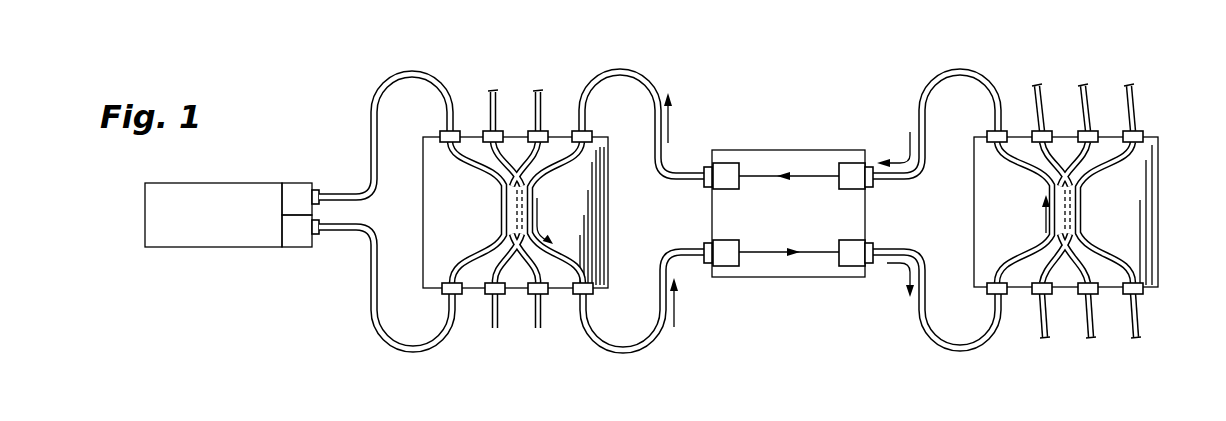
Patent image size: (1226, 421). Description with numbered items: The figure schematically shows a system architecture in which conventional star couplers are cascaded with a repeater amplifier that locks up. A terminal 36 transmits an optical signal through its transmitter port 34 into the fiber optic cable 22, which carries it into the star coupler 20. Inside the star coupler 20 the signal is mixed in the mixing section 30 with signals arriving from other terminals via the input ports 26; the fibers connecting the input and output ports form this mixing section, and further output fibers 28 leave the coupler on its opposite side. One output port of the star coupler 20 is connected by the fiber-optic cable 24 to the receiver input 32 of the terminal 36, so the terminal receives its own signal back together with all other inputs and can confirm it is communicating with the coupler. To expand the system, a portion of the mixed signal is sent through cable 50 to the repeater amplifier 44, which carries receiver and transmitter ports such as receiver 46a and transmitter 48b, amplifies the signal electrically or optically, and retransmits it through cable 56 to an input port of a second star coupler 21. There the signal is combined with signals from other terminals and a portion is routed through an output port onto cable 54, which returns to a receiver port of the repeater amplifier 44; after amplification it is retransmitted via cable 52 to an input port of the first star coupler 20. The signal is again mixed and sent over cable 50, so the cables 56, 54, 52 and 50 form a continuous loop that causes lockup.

The star coupler 20 is at (535, 211).
The star coupler 21 is at (1166, 209).
The fiber optic cable 22 is at (402, 67).
The fiber-optic cable 24 is at (378, 336).
The input ports 26 is at (540, 92).
The output optical fibers 28 is at (540, 328).
The mixing section 30 is at (496, 213).
The receiver input 32 is at (300, 247).
The transmitter port 34 is at (300, 183).
The terminal 36 is at (208, 254).
The repeater amplifier 44 is at (793, 217).
The repeater receiver 46a is at (737, 266).
The repeater transmitter 48b is at (728, 163).
The cable 50 is at (628, 357).
The cable 52 is at (641, 72).
The cable 54 is at (963, 68).
The cable 56 is at (965, 355).